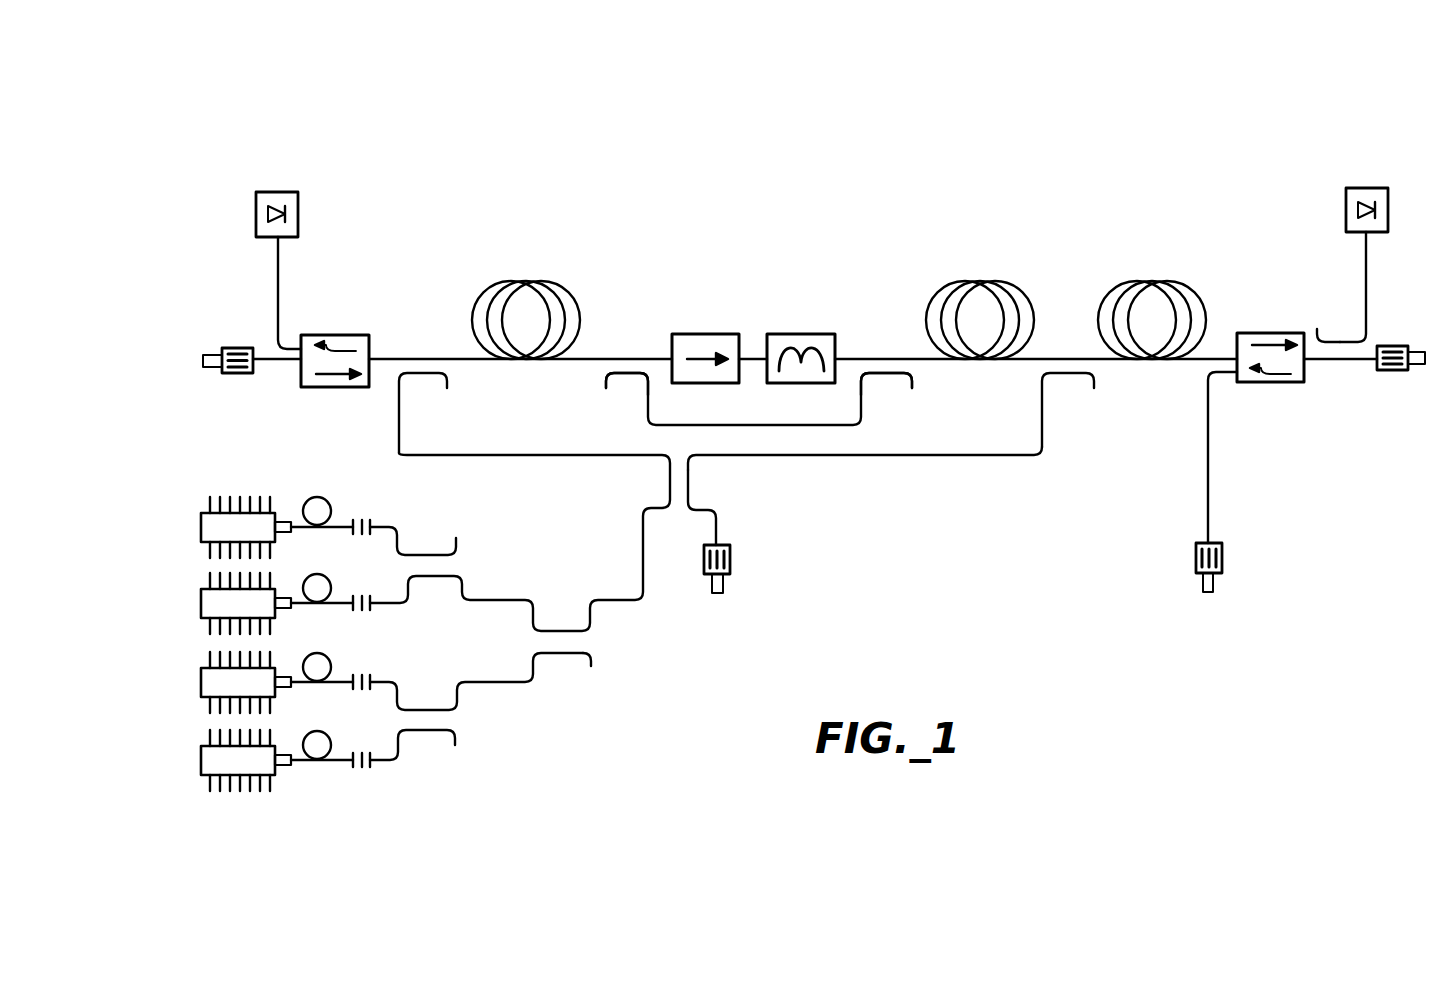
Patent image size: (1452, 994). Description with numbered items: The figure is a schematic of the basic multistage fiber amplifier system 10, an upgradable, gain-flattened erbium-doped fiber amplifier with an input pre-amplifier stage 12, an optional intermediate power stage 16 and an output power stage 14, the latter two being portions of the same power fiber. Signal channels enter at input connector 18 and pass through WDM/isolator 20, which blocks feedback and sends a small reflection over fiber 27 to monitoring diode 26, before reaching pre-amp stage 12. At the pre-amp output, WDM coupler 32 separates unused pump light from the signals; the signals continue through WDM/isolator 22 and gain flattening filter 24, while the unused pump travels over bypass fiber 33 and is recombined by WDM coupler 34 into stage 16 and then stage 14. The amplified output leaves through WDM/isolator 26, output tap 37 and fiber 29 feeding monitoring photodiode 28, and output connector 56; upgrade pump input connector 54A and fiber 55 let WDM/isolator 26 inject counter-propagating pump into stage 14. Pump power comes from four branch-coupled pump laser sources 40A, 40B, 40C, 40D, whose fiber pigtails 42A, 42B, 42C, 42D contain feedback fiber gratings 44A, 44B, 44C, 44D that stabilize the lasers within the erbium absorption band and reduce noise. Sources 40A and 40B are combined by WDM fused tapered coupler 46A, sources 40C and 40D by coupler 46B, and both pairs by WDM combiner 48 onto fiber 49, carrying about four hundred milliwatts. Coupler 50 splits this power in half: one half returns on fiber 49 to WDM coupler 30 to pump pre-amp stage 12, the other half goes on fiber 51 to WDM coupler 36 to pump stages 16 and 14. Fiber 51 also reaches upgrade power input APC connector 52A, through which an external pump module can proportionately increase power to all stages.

The multistage fiber amplifier system 10 is at (1082, 146).
The pre-amplifier stage 12 is at (568, 292).
The power output stage 14 is at (1122, 284).
The intermediate power amplifier stage 16 is at (950, 284).
The input connector 18 is at (245, 375).
The WDM/isolator 20 is at (334, 335).
The WDM/isolator 22 is at (700, 334).
The gain flattening filter 24 is at (790, 334).
The monitoring diode / WDM/isolator 26 is at (298, 223).
The fiber 27 is at (278, 290).
The monitoring photodiode 28 is at (1346, 216).
The fiber 29 is at (1366, 273).
The WDM coupler 30 is at (432, 377).
The WDM coupler 32 is at (612, 380).
The bypass fiber 33 is at (745, 425).
The WDM coupler 34 is at (888, 376).
The WDM coupler 36 is at (1068, 376).
The output tap 37 is at (1330, 338).
The pump laser source 40A is at (201, 527).
The pump laser source 40B is at (201, 603).
The pump laser source 40C is at (201, 682).
The pump laser source 40D is at (201, 760).
The fiber pigtail 42A is at (322, 498).
The fiber pigtail 42B is at (322, 575).
The fiber pigtail 42C is at (322, 654).
The fiber pigtail 42D is at (322, 732).
The feedback fiber grating 44A is at (372, 522).
The feedback fiber grating 44B is at (372, 607).
The feedback fiber grating 44C is at (372, 677).
The feedback fiber grating 44D is at (372, 765).
The WDM fused tapered coupler 46A is at (432, 552).
The WDM fused tapered coupler 46B is at (432, 708).
The WDM combiner 48 is at (565, 655).
The fiber 49 is at (468, 455).
The coupler 50 is at (688, 470).
The fiber 51 is at (885, 457).
The upgrade power input APC connector 52A is at (730, 555).
The upgrade pump input connector 54A is at (1222, 558).
The fiber 55 is at (1210, 453).
The output connector 56 is at (1390, 346).